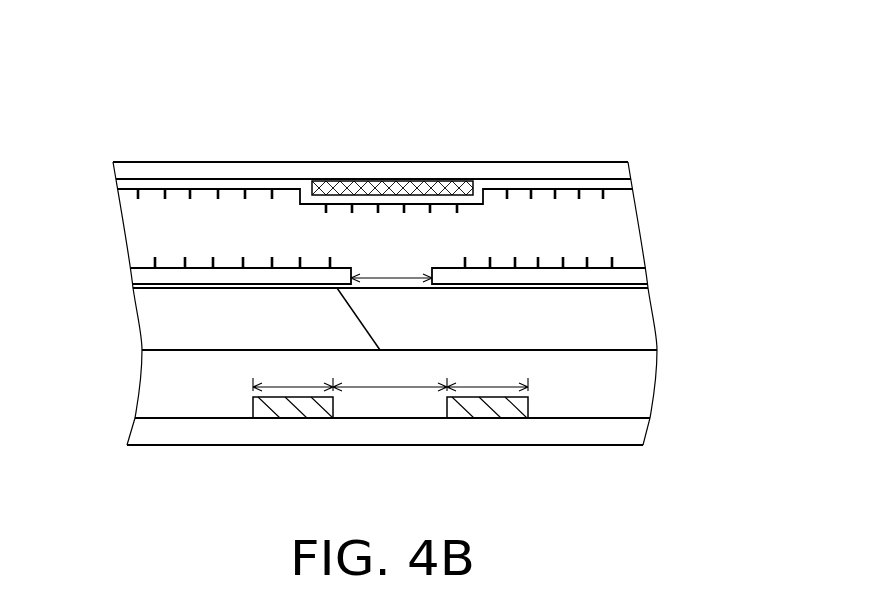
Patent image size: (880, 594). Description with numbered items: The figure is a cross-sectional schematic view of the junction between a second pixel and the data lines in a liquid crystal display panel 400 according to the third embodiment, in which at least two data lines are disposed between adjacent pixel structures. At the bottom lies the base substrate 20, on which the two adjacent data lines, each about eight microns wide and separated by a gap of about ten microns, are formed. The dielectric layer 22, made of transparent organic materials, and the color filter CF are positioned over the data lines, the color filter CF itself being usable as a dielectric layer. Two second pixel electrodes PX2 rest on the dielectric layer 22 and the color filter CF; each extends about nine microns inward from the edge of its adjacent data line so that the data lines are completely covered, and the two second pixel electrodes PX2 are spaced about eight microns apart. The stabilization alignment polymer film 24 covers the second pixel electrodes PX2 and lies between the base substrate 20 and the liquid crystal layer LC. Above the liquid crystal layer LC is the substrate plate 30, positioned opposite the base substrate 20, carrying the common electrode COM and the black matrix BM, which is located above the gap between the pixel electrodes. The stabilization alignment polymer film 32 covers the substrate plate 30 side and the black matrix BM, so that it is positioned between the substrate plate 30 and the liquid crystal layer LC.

The liquid crystal display panel 400 is at (686, 93).
The substrate plate 30 is at (622, 172).
The common electrode COM is at (622, 186).
The black matrix BM is at (372, 181).
The stabilization alignment polymer film 32 is at (137, 196).
The liquid crystal layer LC is at (618, 233).
The stabilization alignment polymer film 24 is at (155, 264).
The second pixel electrode PX2 is at (133, 278).
The color filter CF is at (148, 324).
The dielectric layer 22 is at (650, 388).
The base substrate 20 is at (637, 433).